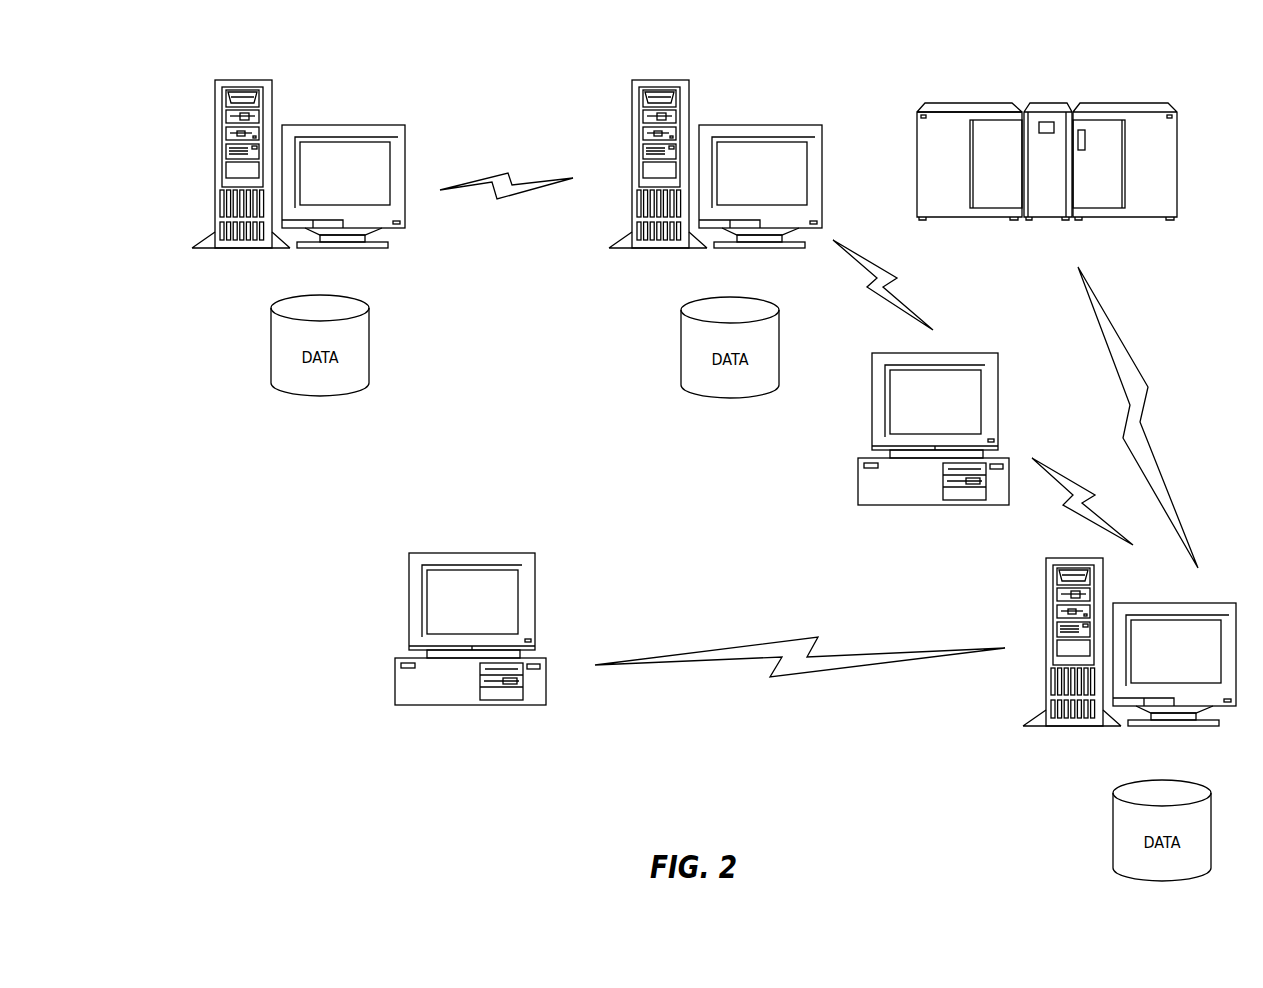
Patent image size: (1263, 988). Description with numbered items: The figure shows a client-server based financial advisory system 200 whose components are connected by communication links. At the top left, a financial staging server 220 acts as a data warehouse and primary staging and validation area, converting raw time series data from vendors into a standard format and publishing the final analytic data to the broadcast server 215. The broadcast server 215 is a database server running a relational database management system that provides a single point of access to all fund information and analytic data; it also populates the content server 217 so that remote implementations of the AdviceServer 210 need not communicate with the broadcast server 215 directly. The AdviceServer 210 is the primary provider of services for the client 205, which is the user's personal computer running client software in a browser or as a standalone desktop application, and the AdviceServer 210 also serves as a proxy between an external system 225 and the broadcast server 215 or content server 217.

The financial advisory system 200 is at (826, 45).
The financial staging server 220 is at (448, 282).
The broadcast server 215 is at (812, 282).
The external system 225 is at (1155, 250).
The content server 217 is at (1025, 537).
The client 205 is at (522, 743).
The AdviceServer 210 is at (1232, 762).